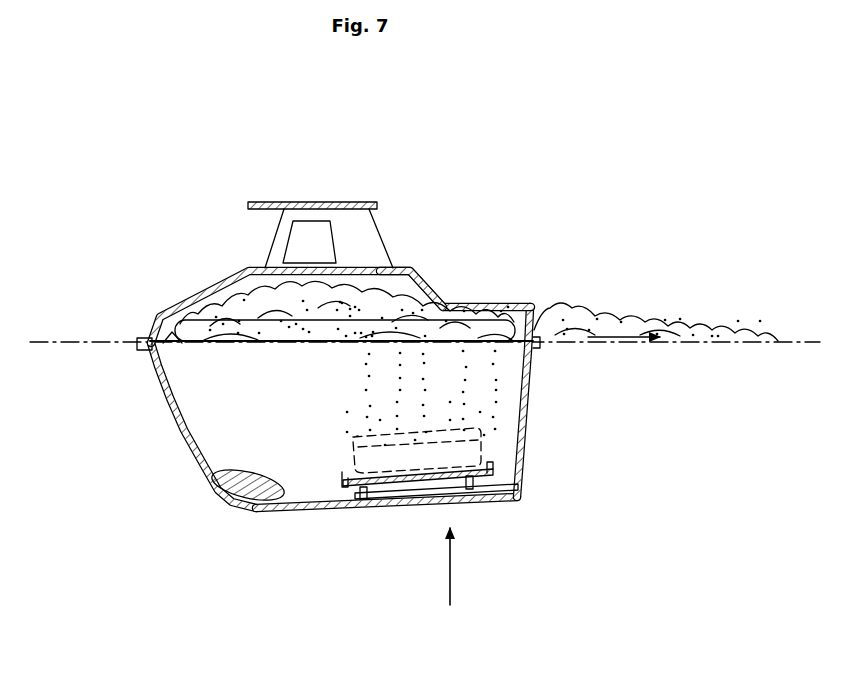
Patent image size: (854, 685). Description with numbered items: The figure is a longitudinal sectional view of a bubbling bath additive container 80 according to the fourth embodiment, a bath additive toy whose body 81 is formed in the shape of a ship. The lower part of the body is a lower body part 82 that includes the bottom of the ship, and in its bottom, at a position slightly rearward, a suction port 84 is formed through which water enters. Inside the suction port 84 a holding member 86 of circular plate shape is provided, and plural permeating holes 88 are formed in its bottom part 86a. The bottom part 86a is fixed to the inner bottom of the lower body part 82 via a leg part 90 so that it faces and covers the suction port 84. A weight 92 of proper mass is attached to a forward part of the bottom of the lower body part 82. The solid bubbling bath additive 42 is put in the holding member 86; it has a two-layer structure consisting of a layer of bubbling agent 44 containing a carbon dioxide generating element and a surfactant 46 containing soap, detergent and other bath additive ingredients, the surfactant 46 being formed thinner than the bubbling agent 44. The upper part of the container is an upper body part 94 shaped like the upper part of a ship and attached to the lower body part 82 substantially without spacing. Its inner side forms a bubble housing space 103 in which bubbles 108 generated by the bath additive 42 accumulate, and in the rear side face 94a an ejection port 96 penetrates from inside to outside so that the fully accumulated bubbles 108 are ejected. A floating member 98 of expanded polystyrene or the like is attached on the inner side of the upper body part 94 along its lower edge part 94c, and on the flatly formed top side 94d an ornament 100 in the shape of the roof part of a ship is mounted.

The bubbling bath additive 42 is at (490, 435).
The bubbling agent 44 is at (352, 470).
The surfactant 46 is at (355, 445).
The bubbling bath additive container 80 is at (550, 167).
The body 81 is at (135, 373).
The lower body part 82 is at (173, 432).
The suction port 84 is at (450, 502).
The holding member 86 is at (493, 467).
The bottom part 86a is at (397, 478).
The permeating holes 88 is at (453, 474).
The leg part 90 is at (522, 493).
The weight 92 is at (237, 485).
The upper body part 94 is at (428, 292).
The rear side face 94a is at (537, 303).
The lower edge part 94c is at (150, 336).
The top side 94d is at (397, 267).
The ejection port 96 is at (543, 325).
The floating member 98 is at (208, 327).
The ornament 100 is at (338, 202).
The bubble housing space 103 is at (238, 287).
The bubbles 108 is at (275, 303).